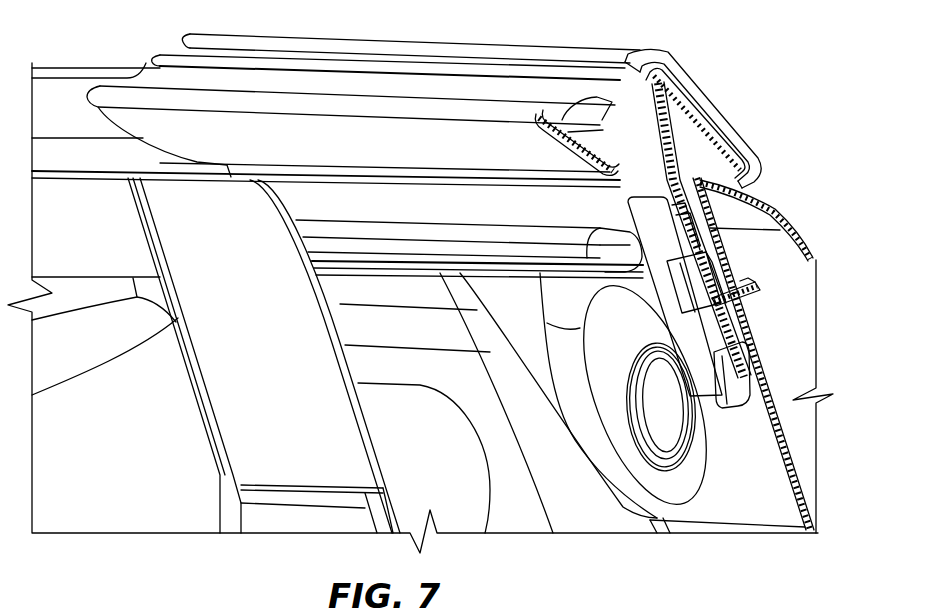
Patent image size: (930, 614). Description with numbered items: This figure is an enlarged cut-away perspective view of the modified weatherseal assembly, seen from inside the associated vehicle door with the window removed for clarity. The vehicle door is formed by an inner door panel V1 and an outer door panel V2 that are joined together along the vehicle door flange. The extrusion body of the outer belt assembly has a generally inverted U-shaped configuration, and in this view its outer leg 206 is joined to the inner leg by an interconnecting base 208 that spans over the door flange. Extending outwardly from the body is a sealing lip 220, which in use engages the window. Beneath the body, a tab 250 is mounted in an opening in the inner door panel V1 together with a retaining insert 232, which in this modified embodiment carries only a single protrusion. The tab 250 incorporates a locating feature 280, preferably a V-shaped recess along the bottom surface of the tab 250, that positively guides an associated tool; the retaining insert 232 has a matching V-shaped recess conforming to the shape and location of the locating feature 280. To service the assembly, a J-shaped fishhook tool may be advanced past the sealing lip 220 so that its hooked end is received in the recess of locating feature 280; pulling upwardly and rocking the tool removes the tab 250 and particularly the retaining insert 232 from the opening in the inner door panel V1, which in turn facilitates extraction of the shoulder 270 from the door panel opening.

The sealing lip 220 is at (410, 157).
The interconnecting base 208 is at (680, 58).
The outer leg 206 is at (720, 100).
The outer door panel V2 is at (800, 238).
The shoulder 270 is at (760, 288).
The retaining insert 232 is at (752, 298).
The tab 250 is at (752, 363).
The locating feature 280 is at (731, 408).
The inner door panel V1 is at (782, 452).